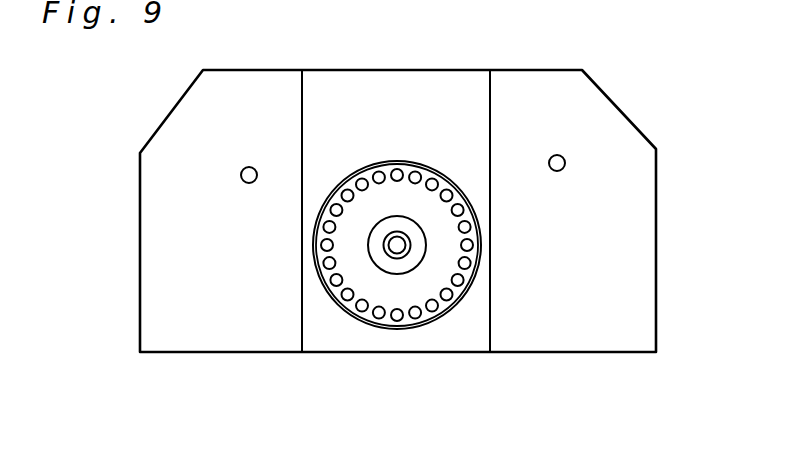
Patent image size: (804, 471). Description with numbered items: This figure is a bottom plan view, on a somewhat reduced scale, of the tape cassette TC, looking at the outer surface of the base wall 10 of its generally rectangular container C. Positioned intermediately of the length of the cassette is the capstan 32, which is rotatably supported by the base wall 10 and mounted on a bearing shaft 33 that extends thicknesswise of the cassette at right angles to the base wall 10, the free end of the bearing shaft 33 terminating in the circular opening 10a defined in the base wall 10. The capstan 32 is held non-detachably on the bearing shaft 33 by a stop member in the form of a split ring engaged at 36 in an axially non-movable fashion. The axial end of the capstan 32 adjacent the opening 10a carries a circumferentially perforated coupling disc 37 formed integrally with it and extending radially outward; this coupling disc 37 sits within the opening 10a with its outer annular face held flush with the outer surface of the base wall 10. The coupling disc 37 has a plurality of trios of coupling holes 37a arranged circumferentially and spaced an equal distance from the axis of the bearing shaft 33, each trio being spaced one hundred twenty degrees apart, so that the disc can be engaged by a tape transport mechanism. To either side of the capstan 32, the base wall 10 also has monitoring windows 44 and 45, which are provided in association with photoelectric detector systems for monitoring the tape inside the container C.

The base wall 10 is at (237, 325).
The circular opening 10a is at (363, 326).
The capstan 32 is at (378, 256).
The bearing shaft 33 is at (397, 253).
The split ring engagement 36 is at (410, 246).
The coupling disc 37 is at (474, 212).
The coupling holes 37a is at (432, 178).
The monitoring window 44 is at (251, 167).
The monitoring window 45 is at (563, 157).
The tape cassette TC is at (128, 298).
The container C is at (137, 353).